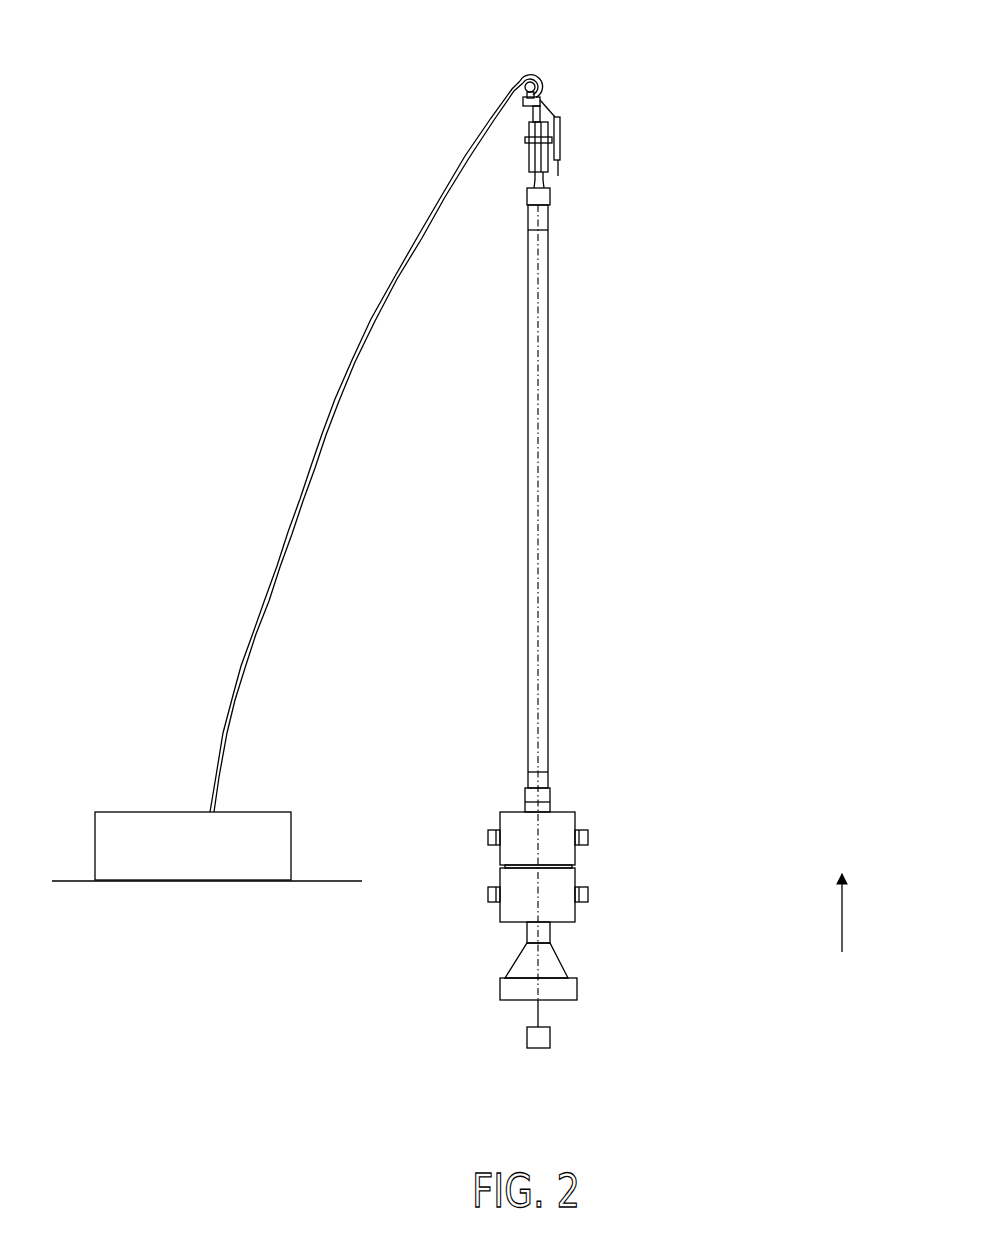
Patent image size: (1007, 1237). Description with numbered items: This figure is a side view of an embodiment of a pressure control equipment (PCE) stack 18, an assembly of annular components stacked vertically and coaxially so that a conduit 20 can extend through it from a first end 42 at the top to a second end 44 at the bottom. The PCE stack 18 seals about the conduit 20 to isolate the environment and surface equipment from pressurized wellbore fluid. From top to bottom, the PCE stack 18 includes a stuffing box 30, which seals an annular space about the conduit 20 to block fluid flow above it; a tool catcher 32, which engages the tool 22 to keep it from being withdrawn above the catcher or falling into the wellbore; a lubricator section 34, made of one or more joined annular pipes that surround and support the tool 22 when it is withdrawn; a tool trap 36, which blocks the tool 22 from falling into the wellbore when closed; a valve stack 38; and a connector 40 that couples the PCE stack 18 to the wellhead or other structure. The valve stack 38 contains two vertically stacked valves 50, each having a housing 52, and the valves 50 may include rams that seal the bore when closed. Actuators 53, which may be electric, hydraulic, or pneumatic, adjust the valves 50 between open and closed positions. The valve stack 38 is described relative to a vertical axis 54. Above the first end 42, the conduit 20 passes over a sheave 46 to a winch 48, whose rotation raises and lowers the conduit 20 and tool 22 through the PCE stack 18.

The PCE stack 18 is at (634, 29).
The conduit 20 is at (466, 155).
The tool 22 is at (551, 1034).
The stuffing box 30 is at (528, 132).
The tool catcher 32 is at (551, 198).
The lubricator section 34 is at (548, 343).
The tool trap 36 is at (549, 782).
The valve stack 38 is at (564, 861).
The connector 40 is at (578, 990).
The first end 42 is at (543, 65).
The second end 44 is at (490, 1015).
The sheave 46 is at (523, 101).
The winch 48 is at (291, 847).
The valve 50 is at (576, 855).
The housing 52 is at (515, 818).
The actuator 53 is at (488, 837).
The vertical axis 54 is at (842, 917).